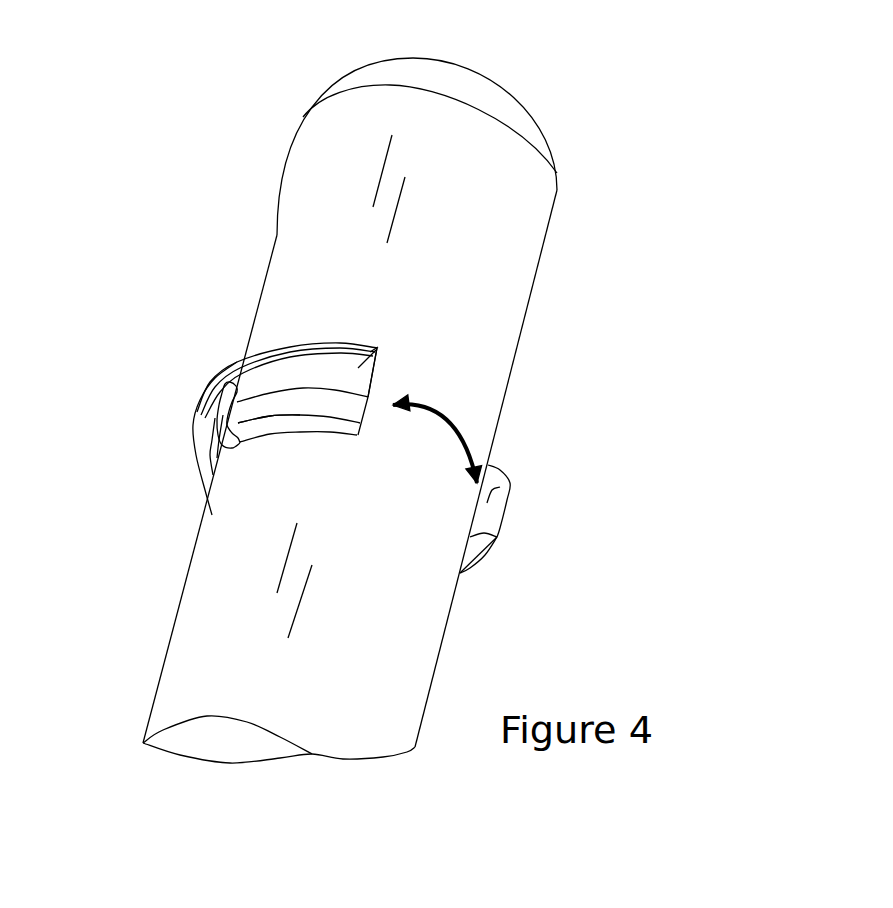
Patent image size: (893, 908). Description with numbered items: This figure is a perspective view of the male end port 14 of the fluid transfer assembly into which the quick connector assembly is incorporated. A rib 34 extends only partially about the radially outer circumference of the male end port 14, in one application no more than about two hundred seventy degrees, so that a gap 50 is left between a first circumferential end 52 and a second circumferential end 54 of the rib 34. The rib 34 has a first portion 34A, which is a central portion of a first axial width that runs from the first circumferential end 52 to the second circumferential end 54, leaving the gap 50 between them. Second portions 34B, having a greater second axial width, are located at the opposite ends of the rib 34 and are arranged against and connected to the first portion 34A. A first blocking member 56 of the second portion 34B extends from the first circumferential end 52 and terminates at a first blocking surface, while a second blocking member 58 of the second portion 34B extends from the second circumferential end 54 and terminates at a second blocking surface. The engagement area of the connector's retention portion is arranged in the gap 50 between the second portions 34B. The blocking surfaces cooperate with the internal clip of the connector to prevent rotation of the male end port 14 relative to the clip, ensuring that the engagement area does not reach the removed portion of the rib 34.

The male end port 14 is at (617, 142).
The rib 34 is at (227, 368).
The first portion of the rib 34A is at (197, 442).
The second portion of the rib 34B is at (370, 352).
The gap 50 is at (468, 441).
The first circumferential end 52 is at (373, 380).
The second circumferential end 54 is at (510, 483).
The first blocking member 56 is at (297, 407).
The second blocking member 58 is at (502, 525).